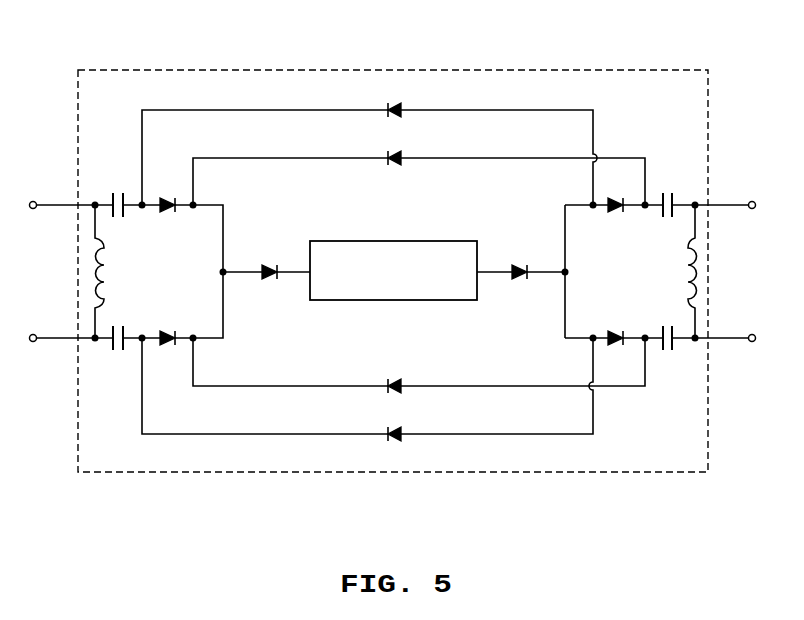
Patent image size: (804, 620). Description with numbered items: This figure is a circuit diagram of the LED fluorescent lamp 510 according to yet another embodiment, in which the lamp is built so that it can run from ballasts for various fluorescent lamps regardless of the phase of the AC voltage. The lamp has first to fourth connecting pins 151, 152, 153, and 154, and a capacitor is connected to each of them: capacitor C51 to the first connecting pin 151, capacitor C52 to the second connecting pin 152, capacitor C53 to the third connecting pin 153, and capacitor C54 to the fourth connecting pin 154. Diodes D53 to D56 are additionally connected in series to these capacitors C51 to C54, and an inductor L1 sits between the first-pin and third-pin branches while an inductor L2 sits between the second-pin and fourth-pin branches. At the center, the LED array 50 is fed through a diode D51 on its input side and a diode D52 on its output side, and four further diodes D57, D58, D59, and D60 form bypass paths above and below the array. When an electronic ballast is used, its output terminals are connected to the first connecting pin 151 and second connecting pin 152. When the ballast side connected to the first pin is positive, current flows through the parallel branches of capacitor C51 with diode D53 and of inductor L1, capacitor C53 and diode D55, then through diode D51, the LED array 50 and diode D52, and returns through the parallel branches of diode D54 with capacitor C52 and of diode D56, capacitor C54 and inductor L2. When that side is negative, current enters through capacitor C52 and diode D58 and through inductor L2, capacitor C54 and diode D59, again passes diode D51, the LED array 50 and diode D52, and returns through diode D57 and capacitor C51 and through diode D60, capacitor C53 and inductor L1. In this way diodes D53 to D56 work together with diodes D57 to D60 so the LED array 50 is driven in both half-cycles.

The LED fluorescent lamp 510 is at (505, 71).
The LED array 50 is at (395, 241).
The first connecting pin 151 is at (50, 196).
The second connecting pin 152 is at (736, 197).
The third connecting pin 153 is at (50, 329).
The fourth connecting pin 154 is at (736, 332).
The capacitor C51 is at (118, 200).
The capacitor C52 is at (674, 198).
The capacitor C53 is at (118, 332).
The capacitor C54 is at (674, 331).
The inductor L1 is at (111, 271).
The inductor L2 is at (678, 271).
The diode D51 is at (274, 261).
The diode D52 is at (525, 261).
The diode D53 is at (172, 197).
The diode D54 is at (622, 195).
The diode D55 is at (175, 329).
The diode D56 is at (622, 329).
The diode D57 is at (396, 100).
The diode D58 is at (396, 171).
The diode D59 is at (396, 375).
The diode D60 is at (396, 446).